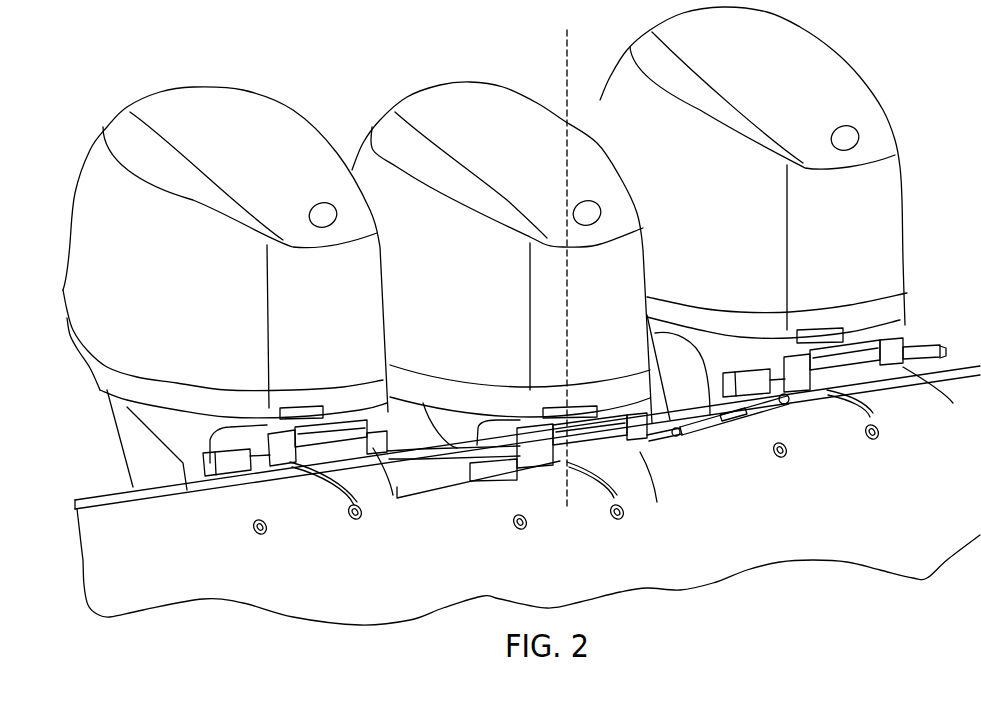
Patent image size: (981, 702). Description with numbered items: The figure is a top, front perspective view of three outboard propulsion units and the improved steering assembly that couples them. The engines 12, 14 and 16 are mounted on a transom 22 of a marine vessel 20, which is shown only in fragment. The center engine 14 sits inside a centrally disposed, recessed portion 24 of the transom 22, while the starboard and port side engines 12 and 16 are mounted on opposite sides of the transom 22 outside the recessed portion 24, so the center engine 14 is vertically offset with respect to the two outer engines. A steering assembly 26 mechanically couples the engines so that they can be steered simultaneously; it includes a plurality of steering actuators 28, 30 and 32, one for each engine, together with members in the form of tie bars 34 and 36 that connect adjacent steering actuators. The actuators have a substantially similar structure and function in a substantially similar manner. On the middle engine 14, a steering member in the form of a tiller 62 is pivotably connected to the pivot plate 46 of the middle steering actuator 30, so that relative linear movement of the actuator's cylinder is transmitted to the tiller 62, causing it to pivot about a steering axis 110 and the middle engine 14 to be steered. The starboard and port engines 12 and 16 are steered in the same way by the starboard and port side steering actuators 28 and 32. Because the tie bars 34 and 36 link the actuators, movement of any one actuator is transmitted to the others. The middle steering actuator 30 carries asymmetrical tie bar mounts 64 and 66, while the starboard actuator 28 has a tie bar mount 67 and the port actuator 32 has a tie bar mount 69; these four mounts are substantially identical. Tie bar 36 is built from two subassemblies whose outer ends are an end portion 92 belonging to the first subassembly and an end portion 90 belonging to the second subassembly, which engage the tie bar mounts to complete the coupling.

The starboard side engine 12 is at (208, 110).
The center engine 14 is at (493, 103).
The port side engine 16 is at (826, 75).
The steering axis 110 is at (568, 58).
The marine vessel 20 is at (95, 441).
The transom 22 is at (120, 493).
The recessed portion 24 is at (379, 429).
The steering assembly 26 is at (932, 328).
The starboard side steering actuator 28 is at (360, 500).
The middle steering actuator 30 is at (630, 470).
The port side steering actuator 32 is at (880, 400).
The tie bar 34 is at (470, 445).
The tie bar 36 is at (796, 447).
The pivot plate 46 is at (560, 397).
The tiller 62 is at (570, 410).
The tie bar mount 64 is at (515, 430).
The tie bar mount 66 is at (657, 440).
The tie bar mount 67 is at (385, 420).
The tie bar mount 69 is at (780, 394).
The end portion 90 is at (700, 455).
The end portion 92 is at (815, 410).